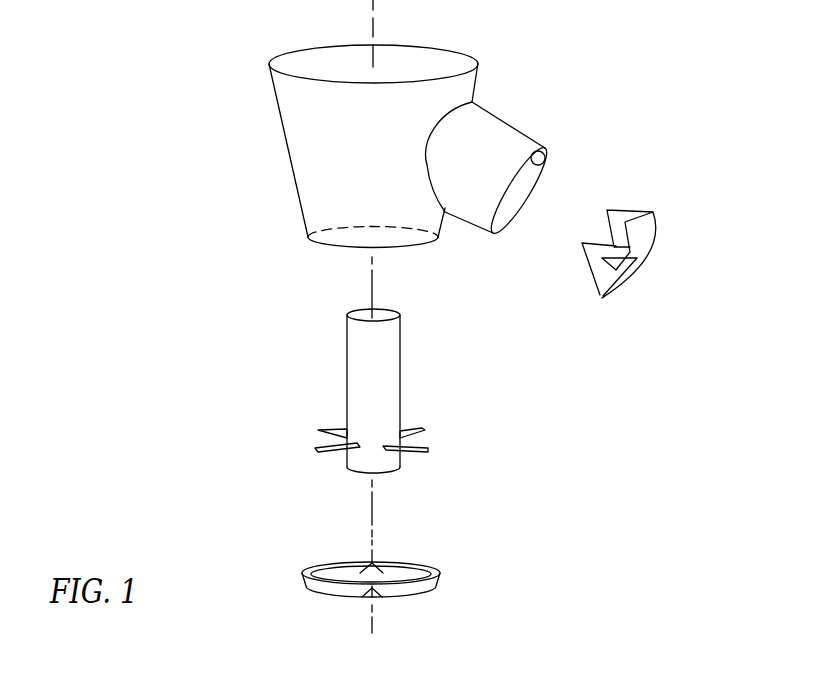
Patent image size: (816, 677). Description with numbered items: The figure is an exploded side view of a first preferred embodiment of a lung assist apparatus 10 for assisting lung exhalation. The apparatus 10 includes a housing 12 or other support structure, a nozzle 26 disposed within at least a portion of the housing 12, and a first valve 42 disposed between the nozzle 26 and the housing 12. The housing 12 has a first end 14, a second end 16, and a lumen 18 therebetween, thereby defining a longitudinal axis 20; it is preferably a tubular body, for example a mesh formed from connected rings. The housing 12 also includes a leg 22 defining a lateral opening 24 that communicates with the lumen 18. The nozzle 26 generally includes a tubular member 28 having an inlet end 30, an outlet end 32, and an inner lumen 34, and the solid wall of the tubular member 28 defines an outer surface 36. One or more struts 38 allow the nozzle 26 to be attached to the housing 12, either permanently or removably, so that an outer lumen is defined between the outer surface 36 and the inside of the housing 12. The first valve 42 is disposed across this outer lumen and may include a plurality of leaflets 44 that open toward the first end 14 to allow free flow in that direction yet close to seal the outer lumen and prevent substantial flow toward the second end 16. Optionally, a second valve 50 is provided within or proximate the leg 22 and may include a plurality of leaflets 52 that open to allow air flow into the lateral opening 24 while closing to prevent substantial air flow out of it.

The lung assist apparatus 10 is at (366, 138).
The housing 12 is at (407, 138).
The first end 14 is at (308, 237).
The second end 16 is at (271, 79).
The lumen 18 is at (304, 58).
The longitudinal axis 20 is at (372, 500).
The leg 22 is at (495, 109).
The lateral opening 24 is at (543, 165).
The nozzle 26 is at (356, 380).
The tubular member 28 is at (408, 389).
The inlet end 30 is at (401, 455).
The outlet end 32 is at (402, 325).
The inner lumen 34 is at (384, 316).
The outer surface 36 is at (388, 413).
The struts 38 is at (330, 450).
The first valve 42 is at (369, 586).
The leaflets 44 is at (426, 589).
The second valve 50 is at (660, 200).
The leaflets 52 is at (593, 258).